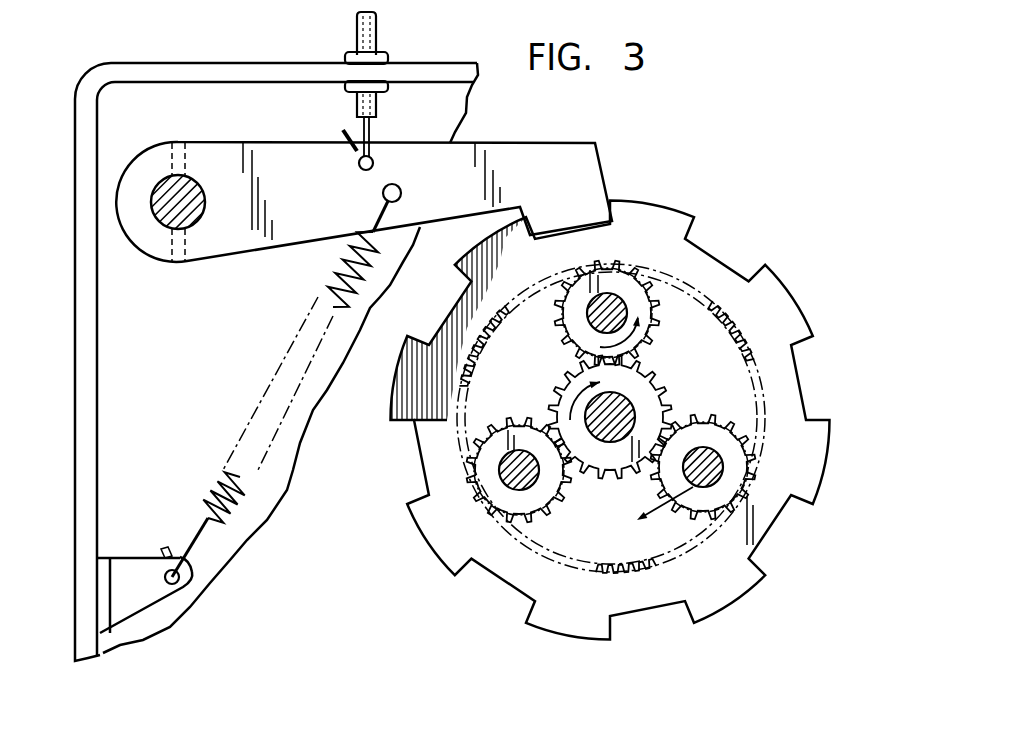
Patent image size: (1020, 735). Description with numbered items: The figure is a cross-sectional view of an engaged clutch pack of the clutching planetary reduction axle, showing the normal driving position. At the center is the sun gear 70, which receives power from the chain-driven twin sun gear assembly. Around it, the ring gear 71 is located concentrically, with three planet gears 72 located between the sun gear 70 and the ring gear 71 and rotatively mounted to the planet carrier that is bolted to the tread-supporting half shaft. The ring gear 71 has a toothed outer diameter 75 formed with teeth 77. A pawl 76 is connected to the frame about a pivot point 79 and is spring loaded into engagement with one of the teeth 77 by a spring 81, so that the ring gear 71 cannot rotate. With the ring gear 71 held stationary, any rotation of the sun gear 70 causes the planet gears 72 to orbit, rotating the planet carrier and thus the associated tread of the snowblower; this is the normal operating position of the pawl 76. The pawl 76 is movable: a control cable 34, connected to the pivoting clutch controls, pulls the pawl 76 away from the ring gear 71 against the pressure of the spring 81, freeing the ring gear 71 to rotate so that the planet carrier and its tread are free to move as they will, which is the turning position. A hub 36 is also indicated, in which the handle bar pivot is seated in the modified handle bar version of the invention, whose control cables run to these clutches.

The control cable 34 is at (354, 33).
The hub 36 is at (376, 128).
The sun gear 70 is at (652, 382).
The ring gear 71 is at (424, 464).
The planet gears 72 is at (566, 322).
The toothed outer diameter 75 is at (430, 545).
The pawl 76 is at (576, 147).
The teeth 77 is at (518, 590).
The pivot point 79 is at (185, 192).
The spring 81 is at (336, 284).